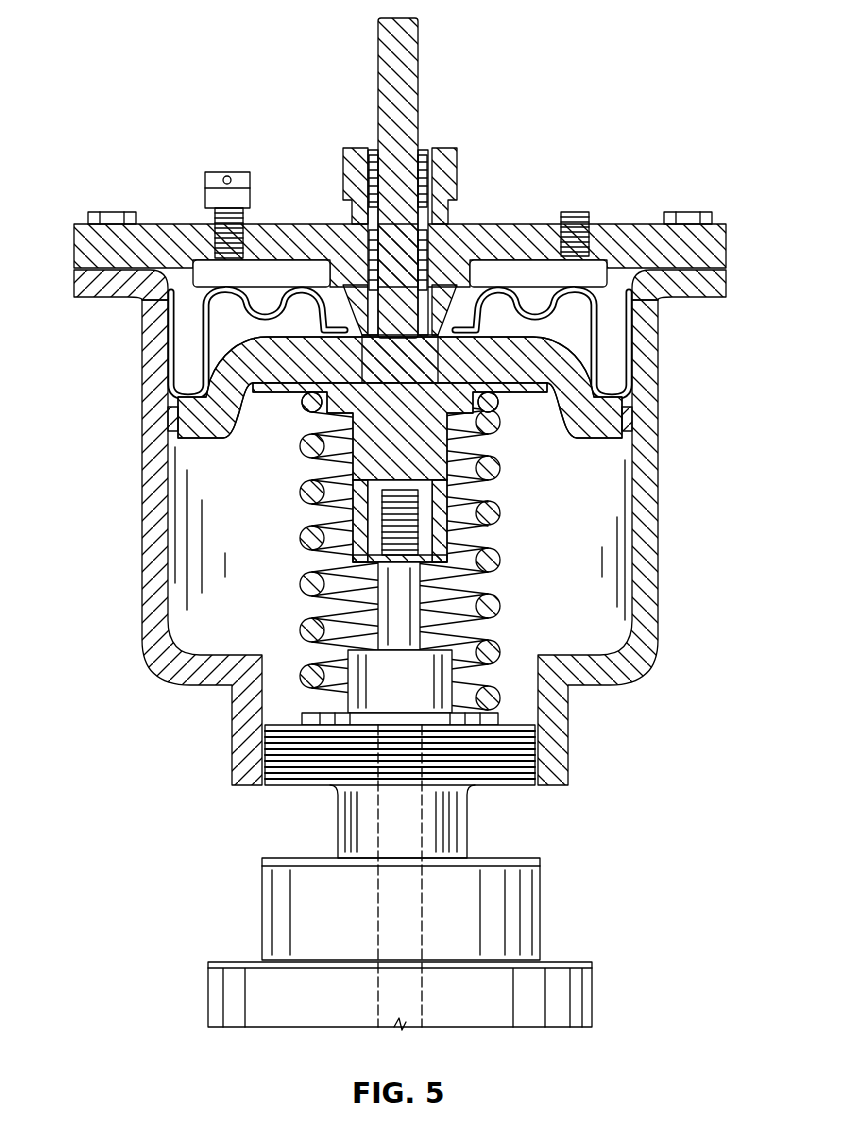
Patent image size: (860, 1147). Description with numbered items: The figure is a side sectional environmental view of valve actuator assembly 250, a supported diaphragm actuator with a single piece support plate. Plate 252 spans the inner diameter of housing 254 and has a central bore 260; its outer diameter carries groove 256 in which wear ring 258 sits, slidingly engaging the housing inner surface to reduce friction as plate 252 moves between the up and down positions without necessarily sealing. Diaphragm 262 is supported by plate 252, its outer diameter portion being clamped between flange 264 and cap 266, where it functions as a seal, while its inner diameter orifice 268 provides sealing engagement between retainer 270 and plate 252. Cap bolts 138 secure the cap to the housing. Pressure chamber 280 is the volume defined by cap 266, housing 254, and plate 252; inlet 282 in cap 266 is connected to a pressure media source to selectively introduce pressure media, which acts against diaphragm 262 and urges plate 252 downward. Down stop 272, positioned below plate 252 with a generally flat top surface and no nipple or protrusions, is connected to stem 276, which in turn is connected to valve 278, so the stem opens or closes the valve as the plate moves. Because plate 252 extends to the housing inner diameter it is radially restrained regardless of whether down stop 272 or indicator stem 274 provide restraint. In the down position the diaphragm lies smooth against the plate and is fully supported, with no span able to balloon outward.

The valve actuator assembly 250 is at (150, 60).
The indicator stem 274 is at (378, 32).
The retainer 270 is at (348, 318).
The cap 266 is at (160, 222).
The inner diameter orifice 268 is at (417, 312).
The inlet 282 is at (577, 222).
The cap bolts 138 is at (692, 212).
The flange 264 is at (728, 285).
The diaphragm 262 is at (597, 320).
The plate 252 is at (560, 368).
The wear ring 258 is at (630, 420).
The housing 254 is at (660, 622).
The valve 278 is at (595, 996).
The pressure chamber 280 is at (262, 305).
The groove 256 is at (168, 418).
The central bore 260 is at (430, 378).
The down stop 272 is at (372, 463).
The stem 276 is at (398, 622).